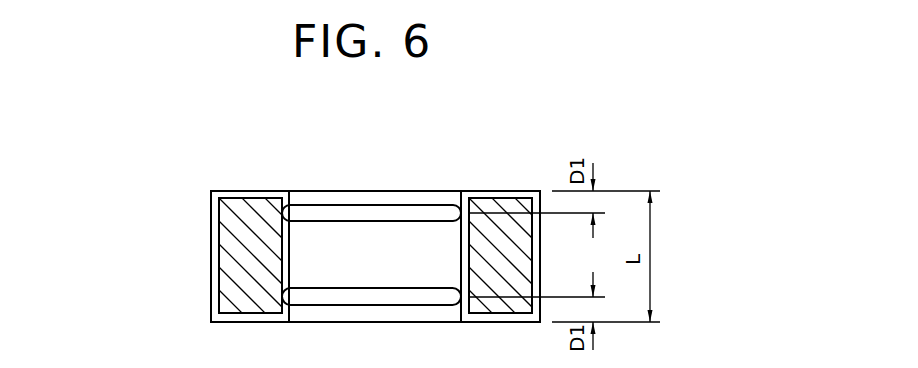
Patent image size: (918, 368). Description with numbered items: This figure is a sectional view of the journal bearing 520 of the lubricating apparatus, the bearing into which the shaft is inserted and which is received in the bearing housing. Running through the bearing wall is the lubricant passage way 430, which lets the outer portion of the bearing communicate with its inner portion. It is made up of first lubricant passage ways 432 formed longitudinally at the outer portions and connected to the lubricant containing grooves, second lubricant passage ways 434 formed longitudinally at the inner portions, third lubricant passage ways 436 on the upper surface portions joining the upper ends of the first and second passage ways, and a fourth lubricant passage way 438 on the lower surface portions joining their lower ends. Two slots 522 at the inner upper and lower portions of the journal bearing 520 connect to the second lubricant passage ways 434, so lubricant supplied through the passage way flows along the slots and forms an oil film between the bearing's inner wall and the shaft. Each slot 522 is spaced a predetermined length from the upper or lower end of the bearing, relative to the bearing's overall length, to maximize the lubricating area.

The lubricant passage way 430 is at (200, 237).
The first lubricant passage ways 432 is at (217, 220).
The second lubricant passage ways 434 is at (285, 275).
The third lubricant passage ways 436 is at (250, 195).
The fourth lubricant passage way 438 is at (204, 336).
The journal bearing 520 is at (512, 170).
The slots 522 is at (368, 212).